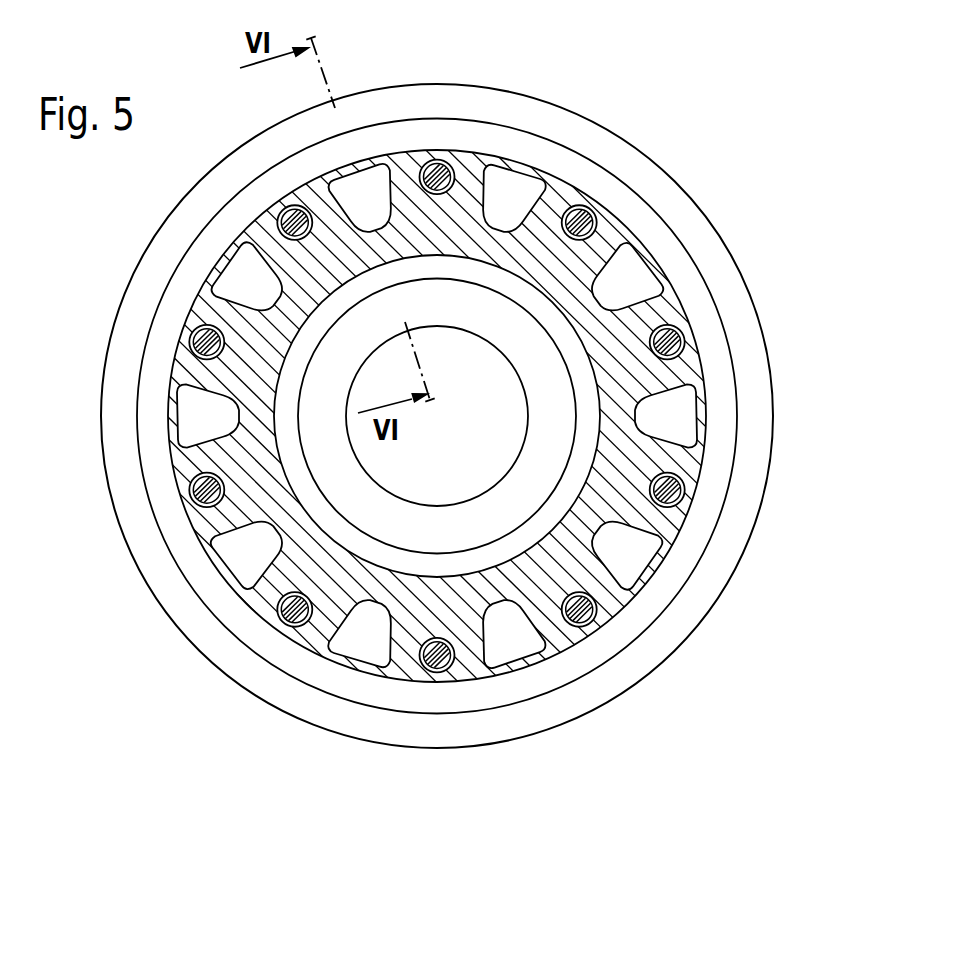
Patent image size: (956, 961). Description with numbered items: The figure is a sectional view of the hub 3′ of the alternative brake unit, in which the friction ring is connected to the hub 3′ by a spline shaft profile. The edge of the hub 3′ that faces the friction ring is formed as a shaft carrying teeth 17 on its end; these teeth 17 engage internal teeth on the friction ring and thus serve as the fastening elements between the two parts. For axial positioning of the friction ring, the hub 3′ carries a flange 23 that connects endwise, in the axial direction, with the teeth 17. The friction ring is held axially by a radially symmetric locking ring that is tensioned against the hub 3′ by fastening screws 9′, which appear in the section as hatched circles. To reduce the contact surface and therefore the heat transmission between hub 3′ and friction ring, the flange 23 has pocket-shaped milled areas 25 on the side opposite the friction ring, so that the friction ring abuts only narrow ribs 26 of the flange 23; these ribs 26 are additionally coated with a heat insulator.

The hub 3′ is at (684, 681).
The fastening screws 9′ is at (684, 346).
The teeth 17 is at (603, 228).
The flange 23 is at (485, 157).
The pocket-shaped milled areas 25 is at (542, 185).
The ribs 26 is at (525, 193).